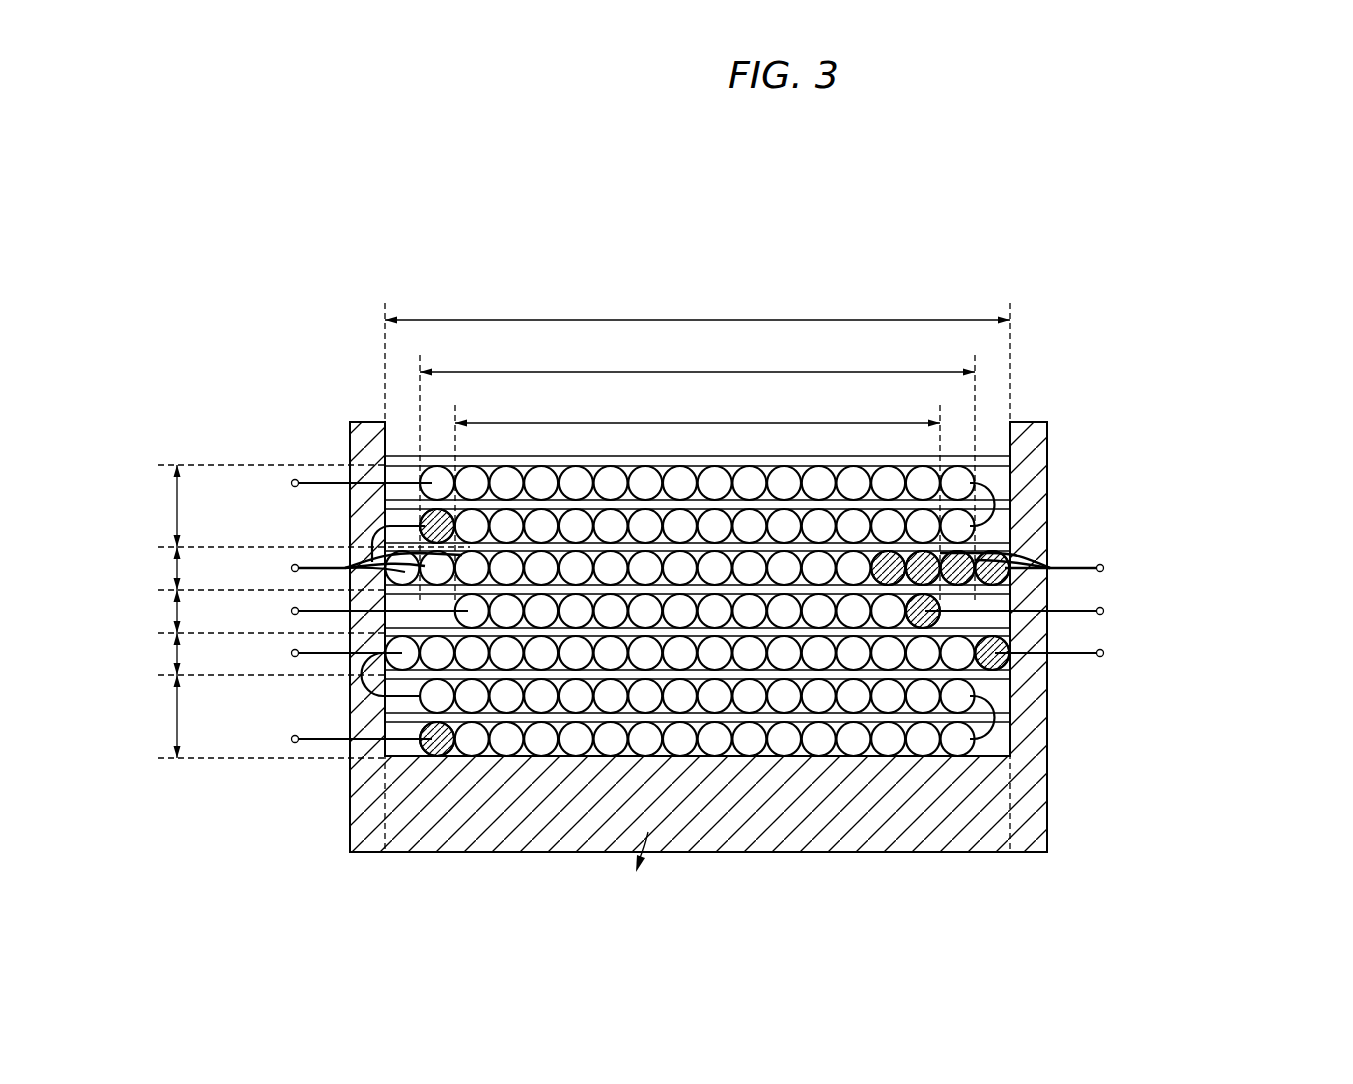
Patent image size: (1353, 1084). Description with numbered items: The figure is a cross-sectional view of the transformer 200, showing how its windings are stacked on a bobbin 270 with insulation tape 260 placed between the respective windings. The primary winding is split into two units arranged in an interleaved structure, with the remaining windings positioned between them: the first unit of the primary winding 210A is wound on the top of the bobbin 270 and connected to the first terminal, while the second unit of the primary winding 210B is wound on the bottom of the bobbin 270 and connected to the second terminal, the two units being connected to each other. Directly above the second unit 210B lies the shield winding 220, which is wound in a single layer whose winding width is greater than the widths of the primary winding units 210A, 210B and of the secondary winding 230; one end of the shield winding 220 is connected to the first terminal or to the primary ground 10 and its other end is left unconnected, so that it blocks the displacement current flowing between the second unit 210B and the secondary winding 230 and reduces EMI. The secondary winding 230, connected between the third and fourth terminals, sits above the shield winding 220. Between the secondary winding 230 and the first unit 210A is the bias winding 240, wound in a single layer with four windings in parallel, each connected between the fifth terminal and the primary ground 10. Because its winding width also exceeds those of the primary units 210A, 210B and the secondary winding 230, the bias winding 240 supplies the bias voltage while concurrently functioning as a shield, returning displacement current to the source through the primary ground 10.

The transformer 200 is at (1052, 373).
The first unit of the primary winding 210A is at (552, 514).
The second unit of the primary winding 210B is at (552, 704).
The shield winding 220 is at (667, 653).
The secondary winding 230 is at (633, 611).
The bias winding 240 is at (633, 568).
The insulation tape 260 is at (1018, 463).
The bobbin 270 is at (1028, 838).
The primary ground 10 is at (358, 568).